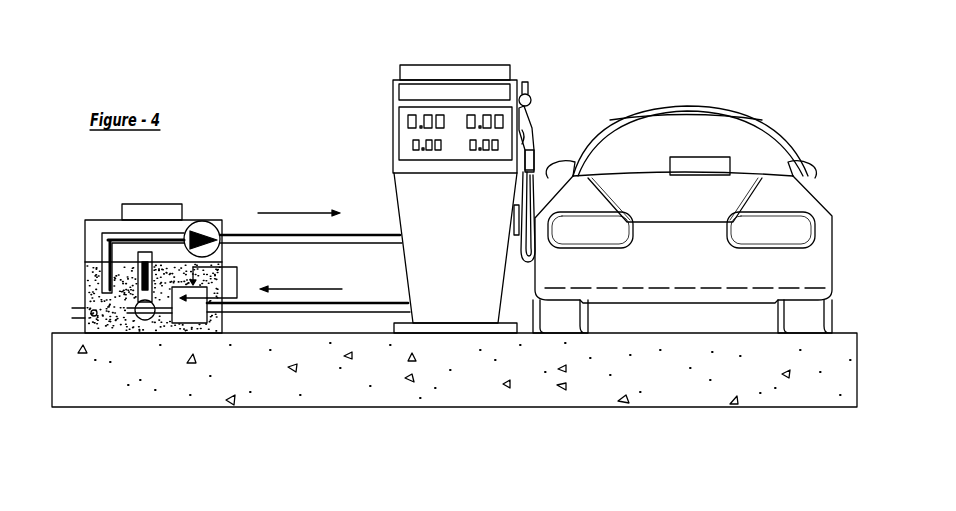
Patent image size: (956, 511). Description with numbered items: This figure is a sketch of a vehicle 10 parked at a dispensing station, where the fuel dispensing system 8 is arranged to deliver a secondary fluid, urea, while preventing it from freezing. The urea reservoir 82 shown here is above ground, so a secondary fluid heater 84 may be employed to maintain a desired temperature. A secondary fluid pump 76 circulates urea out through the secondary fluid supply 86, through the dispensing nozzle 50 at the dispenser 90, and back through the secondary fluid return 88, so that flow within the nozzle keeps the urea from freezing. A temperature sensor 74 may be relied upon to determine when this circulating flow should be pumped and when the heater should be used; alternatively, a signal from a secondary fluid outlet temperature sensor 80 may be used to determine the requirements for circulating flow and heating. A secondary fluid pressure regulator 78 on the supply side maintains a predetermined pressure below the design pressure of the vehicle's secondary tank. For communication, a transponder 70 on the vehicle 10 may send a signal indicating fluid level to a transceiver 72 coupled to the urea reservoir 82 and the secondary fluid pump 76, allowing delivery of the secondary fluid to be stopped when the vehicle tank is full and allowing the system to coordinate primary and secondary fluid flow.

The fuel dispensing system 8 is at (526, 452).
The vehicle 10 is at (757, 142).
The dispensing nozzle 50 is at (532, 129).
The transponder 70 is at (698, 165).
The transceiver 72 is at (162, 214).
The temperature sensor 74 is at (529, 100).
The secondary fluid pump 76 is at (205, 222).
The secondary fluid pressure regulator 78 is at (178, 325).
The secondary fluid outlet temperature sensor 80 is at (140, 320).
The urea reservoir 82 is at (90, 276).
The secondary fluid heater 84 is at (88, 306).
The secondary fluid supply 86 is at (352, 243).
The secondary fluid return 88 is at (377, 303).
The fuel dispenser 90 is at (463, 241).